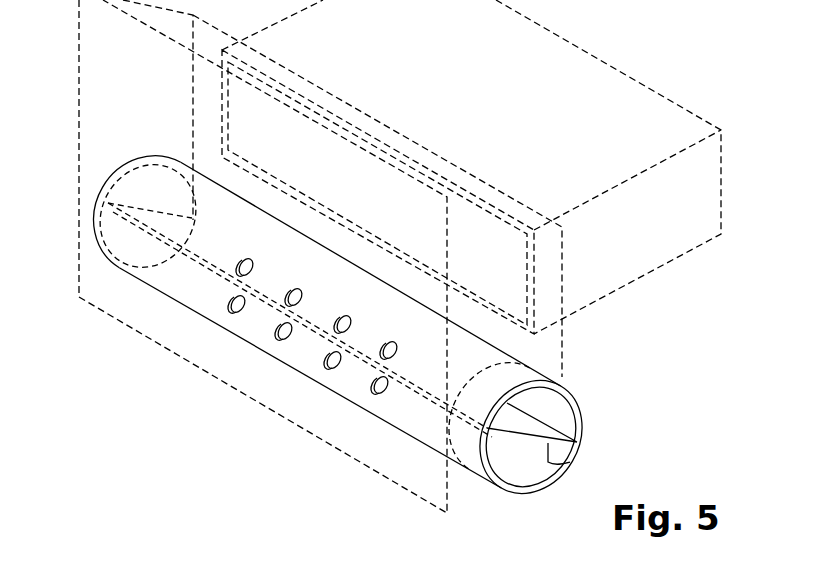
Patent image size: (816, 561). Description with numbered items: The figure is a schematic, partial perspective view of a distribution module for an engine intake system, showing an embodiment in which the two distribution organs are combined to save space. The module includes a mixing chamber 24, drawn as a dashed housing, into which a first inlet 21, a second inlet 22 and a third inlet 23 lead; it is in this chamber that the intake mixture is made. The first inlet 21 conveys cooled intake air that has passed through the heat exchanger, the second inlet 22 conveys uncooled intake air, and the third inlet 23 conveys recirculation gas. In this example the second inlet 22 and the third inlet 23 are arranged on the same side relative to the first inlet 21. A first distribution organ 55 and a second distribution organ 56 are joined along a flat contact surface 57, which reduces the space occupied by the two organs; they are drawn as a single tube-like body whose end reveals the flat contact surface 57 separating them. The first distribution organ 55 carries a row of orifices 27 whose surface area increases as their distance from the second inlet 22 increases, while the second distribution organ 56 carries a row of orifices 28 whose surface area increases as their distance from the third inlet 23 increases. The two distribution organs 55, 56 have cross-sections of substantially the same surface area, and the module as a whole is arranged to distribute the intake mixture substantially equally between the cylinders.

The first inlet 21 is at (247, 113).
The second inlet 22 is at (519, 462).
The third inlet 23 is at (545, 407).
The mixing chamber 24 is at (126, 60).
The orifices 27 is at (283, 339).
The orifices 28 is at (290, 292).
The first distribution organ 55 is at (213, 290).
The second distribution organ 56 is at (315, 270).
The flat contact surface 57 is at (560, 472).